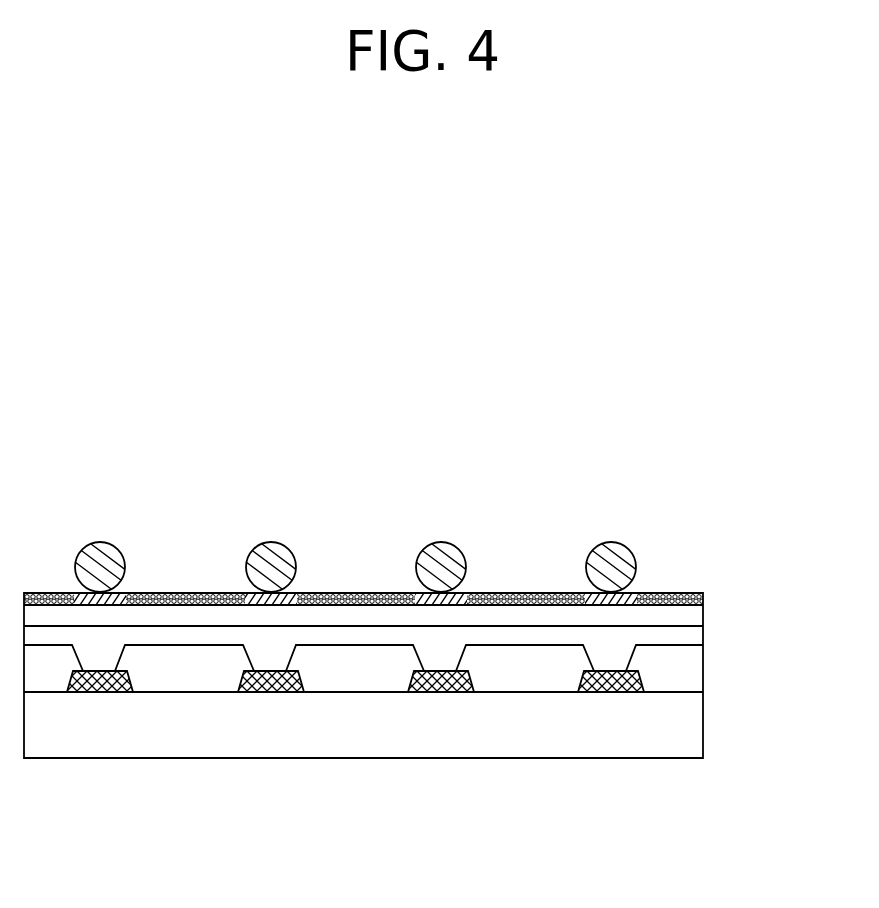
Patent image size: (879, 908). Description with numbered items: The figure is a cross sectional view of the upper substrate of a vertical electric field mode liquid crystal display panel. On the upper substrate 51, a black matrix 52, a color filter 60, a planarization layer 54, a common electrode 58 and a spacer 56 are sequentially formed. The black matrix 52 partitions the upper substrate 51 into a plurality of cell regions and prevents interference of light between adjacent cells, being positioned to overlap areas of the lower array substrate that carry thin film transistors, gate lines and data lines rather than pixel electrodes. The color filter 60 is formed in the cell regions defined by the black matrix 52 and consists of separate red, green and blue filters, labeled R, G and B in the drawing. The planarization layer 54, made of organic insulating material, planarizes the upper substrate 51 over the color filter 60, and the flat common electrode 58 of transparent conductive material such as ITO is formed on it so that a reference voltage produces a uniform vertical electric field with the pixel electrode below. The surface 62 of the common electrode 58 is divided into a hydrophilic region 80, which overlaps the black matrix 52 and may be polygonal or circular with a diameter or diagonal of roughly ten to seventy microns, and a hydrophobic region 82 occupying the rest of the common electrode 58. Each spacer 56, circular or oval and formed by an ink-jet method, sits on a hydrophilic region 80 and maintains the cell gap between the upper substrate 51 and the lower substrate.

The upper substrate 51 is at (703, 728).
The black matrix 52 is at (613, 693).
The planarization layer 54 is at (703, 640).
The spacer 56 is at (632, 572).
The common electrode 58 is at (703, 612).
The color filter 60 is at (703, 672).
The surface of the common electrode 62 is at (363, 551).
The hydrophilic region 80 is at (117, 591).
The hydrophobic region 82 is at (172, 590).